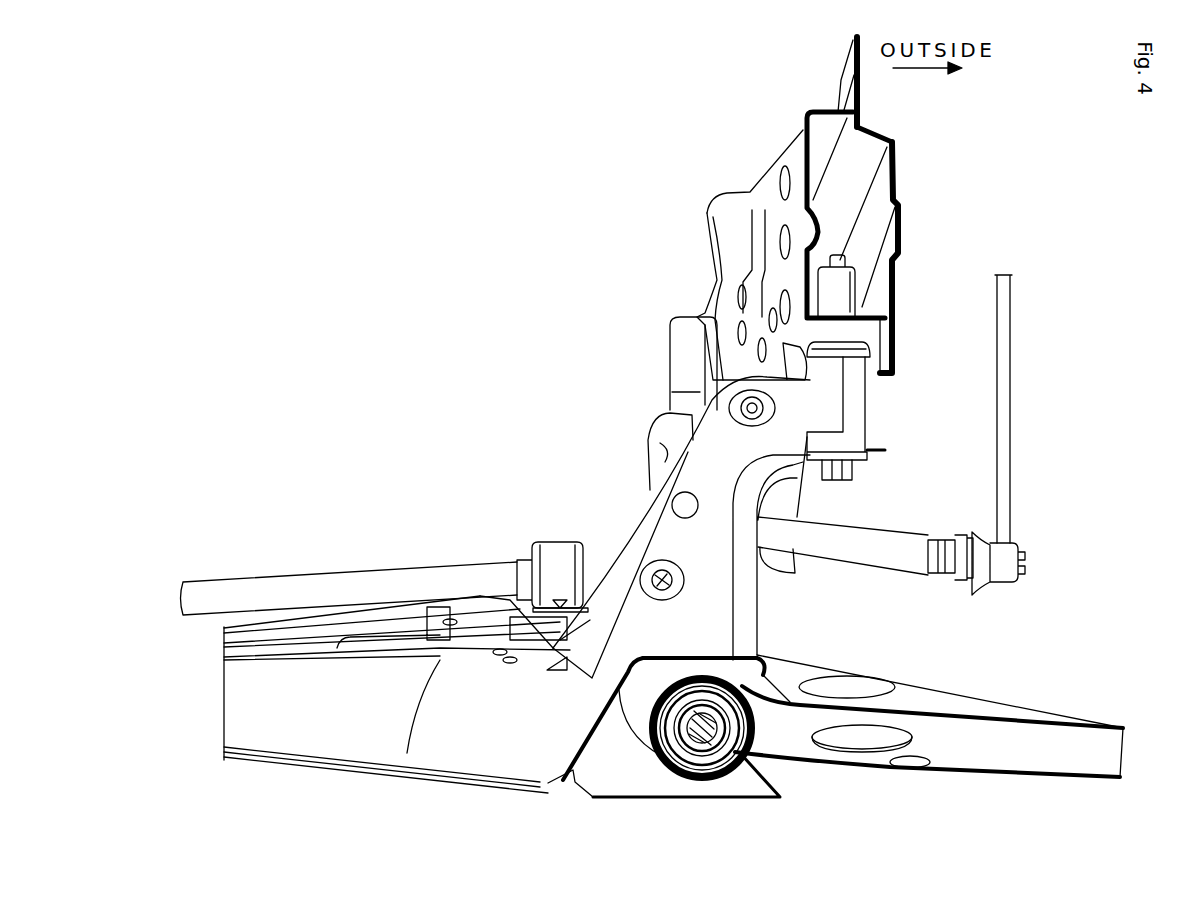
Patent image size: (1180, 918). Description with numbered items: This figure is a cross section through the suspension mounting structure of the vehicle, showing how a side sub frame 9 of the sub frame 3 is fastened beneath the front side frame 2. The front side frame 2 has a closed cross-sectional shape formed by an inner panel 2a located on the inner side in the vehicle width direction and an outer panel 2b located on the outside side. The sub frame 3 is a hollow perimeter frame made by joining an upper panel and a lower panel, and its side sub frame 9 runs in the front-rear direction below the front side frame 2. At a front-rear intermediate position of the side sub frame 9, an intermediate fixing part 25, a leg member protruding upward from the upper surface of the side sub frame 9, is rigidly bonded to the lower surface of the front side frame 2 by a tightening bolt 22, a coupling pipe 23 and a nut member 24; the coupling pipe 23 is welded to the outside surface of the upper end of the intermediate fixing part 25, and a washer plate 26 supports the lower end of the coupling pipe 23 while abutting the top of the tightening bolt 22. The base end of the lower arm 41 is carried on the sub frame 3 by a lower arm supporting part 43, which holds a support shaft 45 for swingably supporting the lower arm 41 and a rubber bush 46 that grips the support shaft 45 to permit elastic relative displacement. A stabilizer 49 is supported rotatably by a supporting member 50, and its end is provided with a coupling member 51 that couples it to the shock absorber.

The front side frame 2 is at (914, 150).
The inner panel 2a is at (905, 227).
The outer panel 2b is at (793, 150).
The sub frame 3 is at (290, 773).
The side sub frame 9 is at (693, 650).
The tightening bolt 22 is at (835, 482).
The coupling pipe 23 is at (858, 420).
The nut member 24 is at (842, 300).
The intermediate fixing part 25 is at (621, 510).
The washer plate 26 is at (885, 452).
The lower arm 41 is at (975, 688).
The lower arm supporting part 43 is at (659, 776).
The support shaft 45 is at (717, 737).
The rubber bush 46 is at (703, 762).
The stabilizer 49 is at (392, 573).
The supporting member 50 is at (560, 550).
The coupling member 51 is at (1010, 368).